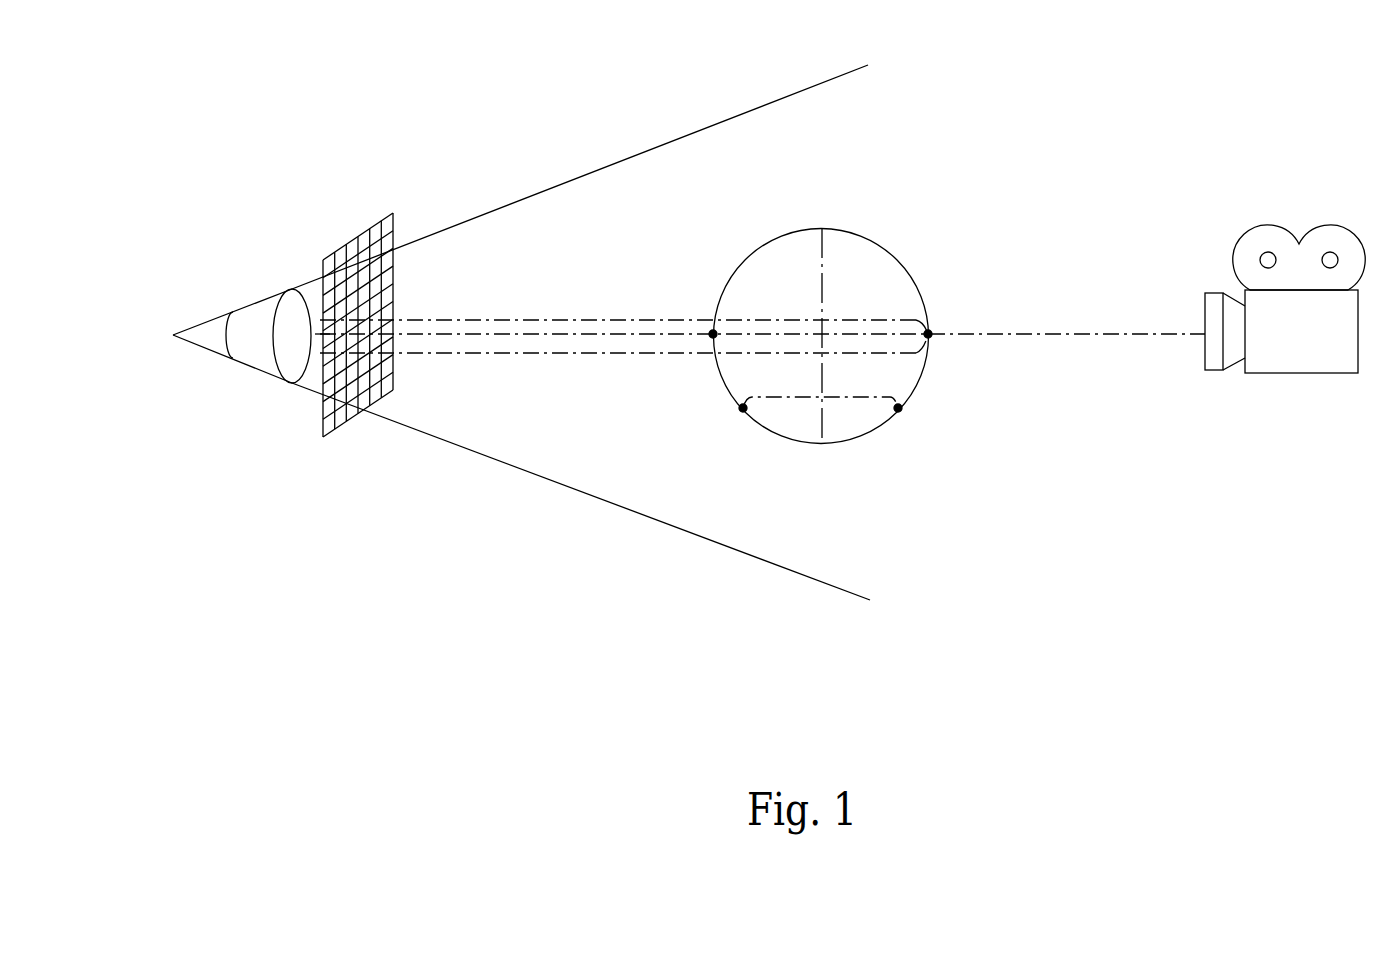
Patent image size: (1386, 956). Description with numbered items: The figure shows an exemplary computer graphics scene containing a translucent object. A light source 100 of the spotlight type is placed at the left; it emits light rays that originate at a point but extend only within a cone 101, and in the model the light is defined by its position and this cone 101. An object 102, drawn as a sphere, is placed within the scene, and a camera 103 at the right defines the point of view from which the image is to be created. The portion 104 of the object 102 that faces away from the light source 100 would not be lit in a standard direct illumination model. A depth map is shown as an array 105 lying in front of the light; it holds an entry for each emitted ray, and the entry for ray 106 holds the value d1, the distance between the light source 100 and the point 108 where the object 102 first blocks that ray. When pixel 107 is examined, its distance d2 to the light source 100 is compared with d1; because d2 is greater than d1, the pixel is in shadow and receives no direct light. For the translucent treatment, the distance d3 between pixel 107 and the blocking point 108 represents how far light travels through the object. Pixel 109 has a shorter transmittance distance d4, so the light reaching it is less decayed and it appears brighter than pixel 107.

The light source 100 is at (210, 342).
The cone 101 is at (530, 193).
The object 102 is at (835, 237).
The camera 103 is at (1285, 373).
The portion of object facing away from light 104 is at (872, 252).
The array 105 is at (323, 437).
The ray 106 is at (640, 337).
The pixel 107 is at (928, 334).
The point 108 is at (713, 334).
The pixel 109 is at (898, 408).
The distance between light source and nearest object d1 is at (549, 320).
The distance between pixel and light source d2 is at (549, 353).
The transmittance distance d3 is at (799, 320).
The transmittance distance for pixel 109 d4 is at (854, 397).